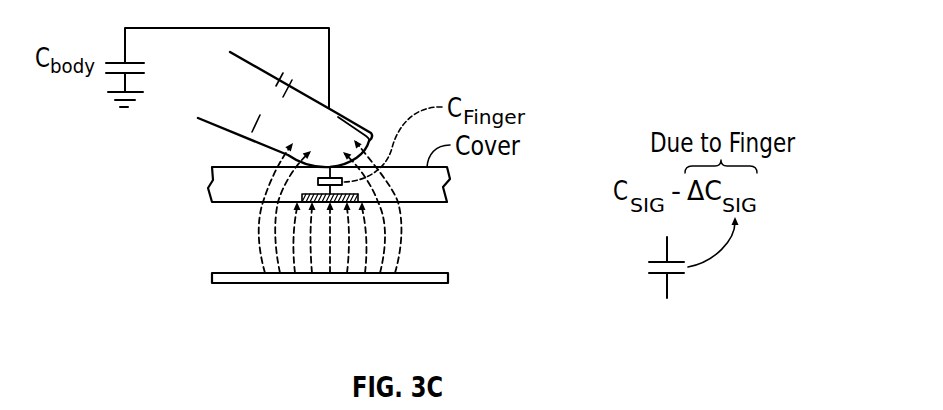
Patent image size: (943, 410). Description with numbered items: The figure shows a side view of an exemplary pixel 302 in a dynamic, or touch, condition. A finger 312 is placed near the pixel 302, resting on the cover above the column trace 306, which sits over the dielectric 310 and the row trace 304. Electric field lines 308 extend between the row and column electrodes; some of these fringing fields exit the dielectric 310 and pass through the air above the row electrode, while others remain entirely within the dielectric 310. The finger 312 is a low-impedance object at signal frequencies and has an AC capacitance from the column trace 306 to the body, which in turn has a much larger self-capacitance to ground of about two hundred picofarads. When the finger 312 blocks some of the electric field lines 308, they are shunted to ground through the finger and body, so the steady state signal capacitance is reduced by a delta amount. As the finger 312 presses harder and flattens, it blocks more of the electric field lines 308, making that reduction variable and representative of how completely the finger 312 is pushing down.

The pixel 302 is at (408, 308).
The row trace 304 is at (257, 284).
The column trace 306 is at (302, 197).
The electric field lines 308 is at (402, 228).
The dielectric 310 is at (243, 235).
The finger 312 is at (316, 98).